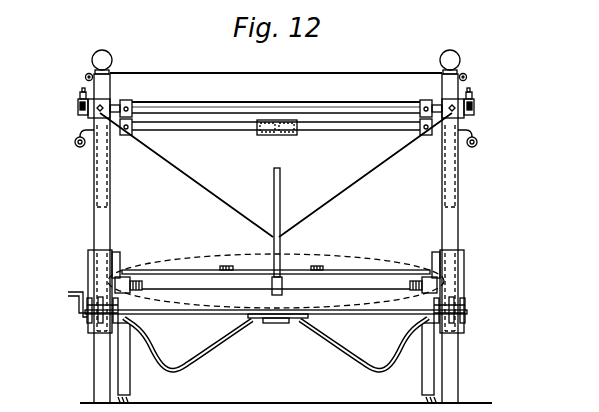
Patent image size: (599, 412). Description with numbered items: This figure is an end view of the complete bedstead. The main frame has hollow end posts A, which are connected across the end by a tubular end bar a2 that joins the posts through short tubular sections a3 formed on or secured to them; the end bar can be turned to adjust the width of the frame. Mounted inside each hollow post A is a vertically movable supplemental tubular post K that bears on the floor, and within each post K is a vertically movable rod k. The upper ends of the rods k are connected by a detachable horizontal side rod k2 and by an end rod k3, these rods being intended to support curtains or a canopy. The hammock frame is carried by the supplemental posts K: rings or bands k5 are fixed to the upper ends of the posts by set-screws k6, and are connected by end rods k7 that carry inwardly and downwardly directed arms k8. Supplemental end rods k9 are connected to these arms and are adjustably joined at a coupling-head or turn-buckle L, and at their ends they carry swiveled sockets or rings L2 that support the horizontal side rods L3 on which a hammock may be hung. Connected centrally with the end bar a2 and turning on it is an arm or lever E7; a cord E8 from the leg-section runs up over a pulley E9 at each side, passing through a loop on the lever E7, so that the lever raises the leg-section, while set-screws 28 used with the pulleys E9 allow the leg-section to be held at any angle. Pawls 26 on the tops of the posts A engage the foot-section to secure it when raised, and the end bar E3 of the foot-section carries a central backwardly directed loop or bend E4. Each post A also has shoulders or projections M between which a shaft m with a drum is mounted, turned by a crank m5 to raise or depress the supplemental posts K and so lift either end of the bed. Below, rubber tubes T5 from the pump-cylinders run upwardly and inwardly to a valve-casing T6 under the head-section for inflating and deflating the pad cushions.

The supplemental tubular post K is at (94, 215).
The end post A is at (450, 352).
The vertically-movable rod k is at (110, 80).
The horizontal side rod k2 is at (89, 73).
The swiveled socket or ring L2 is at (77, 150).
The horizontal side rod L3 is at (75, 145).
The pulley E9 is at (78, 105).
The set-screw 28 is at (82, 90).
The set-screw k6 is at (112, 110).
The ring or band k5 is at (88, 110).
The inwardly and downwardly directed arm k8 is at (132, 121).
The end rod k3 is at (372, 73).
The end rod k7 is at (261, 112).
The tubular coupling-head or turn-buckle L is at (287, 126).
The supplemental end rod k9 is at (223, 131).
The cord E8 is at (210, 188).
The arm or lever E7 is at (281, 192).
The end bar E3 is at (343, 268).
The backwardly-directed loop or bend E4 is at (255, 266).
The pawl 26 is at (118, 255).
The short tubular section a3 is at (122, 280).
The end bar a2 is at (329, 277).
The shaft m is at (209, 316).
The shoulder or projection M is at (88, 322).
The crank m5 is at (68, 293).
The valve-casing T6 is at (283, 320).
The rubber tube T5 is at (276, 356).